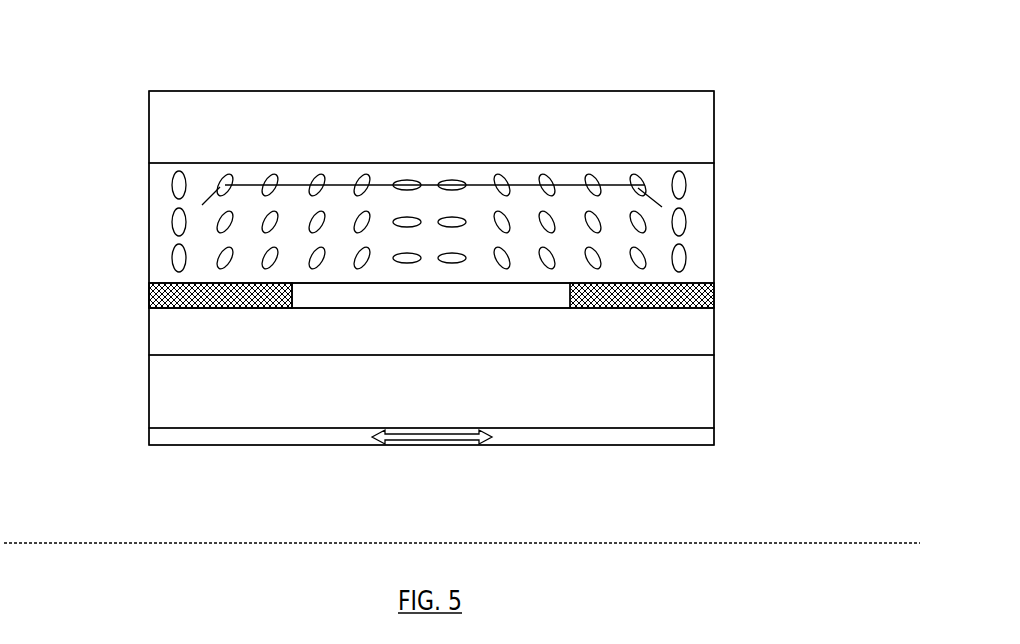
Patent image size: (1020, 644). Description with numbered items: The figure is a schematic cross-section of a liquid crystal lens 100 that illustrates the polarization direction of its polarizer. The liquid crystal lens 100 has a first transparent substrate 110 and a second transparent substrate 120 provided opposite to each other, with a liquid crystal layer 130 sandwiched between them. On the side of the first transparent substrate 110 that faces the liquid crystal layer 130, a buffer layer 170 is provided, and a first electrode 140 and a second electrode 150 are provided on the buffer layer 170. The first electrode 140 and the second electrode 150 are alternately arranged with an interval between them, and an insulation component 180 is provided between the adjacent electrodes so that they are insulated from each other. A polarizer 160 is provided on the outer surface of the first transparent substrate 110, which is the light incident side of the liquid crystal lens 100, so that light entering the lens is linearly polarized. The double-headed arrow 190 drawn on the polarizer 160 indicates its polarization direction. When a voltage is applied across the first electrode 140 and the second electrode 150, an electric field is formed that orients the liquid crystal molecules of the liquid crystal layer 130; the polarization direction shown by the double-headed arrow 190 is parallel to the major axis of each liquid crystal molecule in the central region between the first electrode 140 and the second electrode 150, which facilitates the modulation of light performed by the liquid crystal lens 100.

The liquid crystal lens 100 is at (888, 33).
The first transparent substrate 110 is at (714, 395).
The second transparent substrate 120 is at (714, 139).
The liquid crystal layer 130 is at (704, 233).
The first electrode 140 is at (195, 222).
The second electrode 150 is at (714, 294).
The polarizer 160 is at (714, 442).
The buffer layer 170 is at (714, 333).
The insulation component 180 is at (337, 297).
The double-headed arrow 190 is at (440, 441).